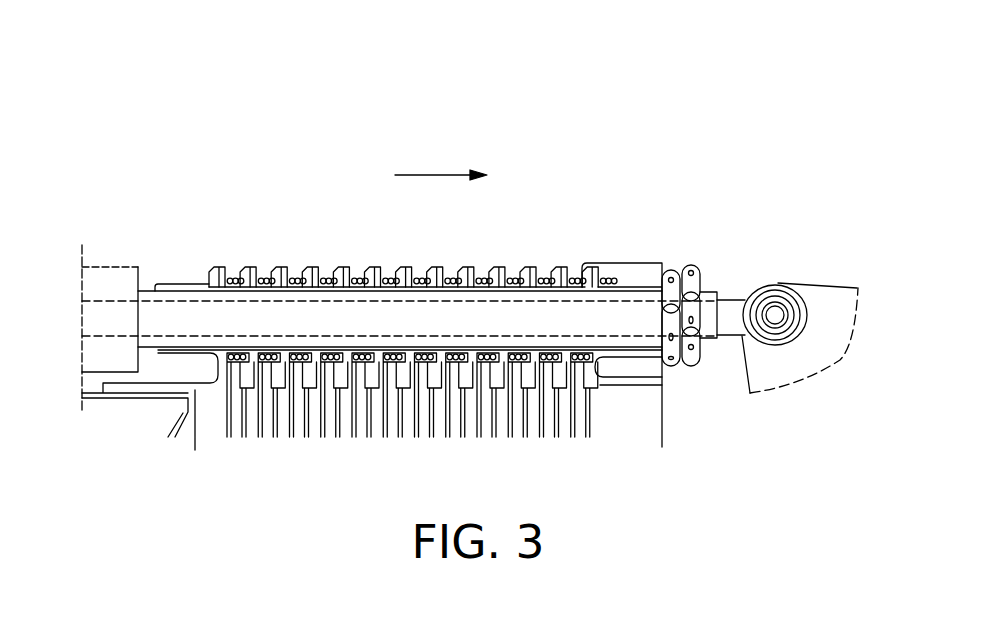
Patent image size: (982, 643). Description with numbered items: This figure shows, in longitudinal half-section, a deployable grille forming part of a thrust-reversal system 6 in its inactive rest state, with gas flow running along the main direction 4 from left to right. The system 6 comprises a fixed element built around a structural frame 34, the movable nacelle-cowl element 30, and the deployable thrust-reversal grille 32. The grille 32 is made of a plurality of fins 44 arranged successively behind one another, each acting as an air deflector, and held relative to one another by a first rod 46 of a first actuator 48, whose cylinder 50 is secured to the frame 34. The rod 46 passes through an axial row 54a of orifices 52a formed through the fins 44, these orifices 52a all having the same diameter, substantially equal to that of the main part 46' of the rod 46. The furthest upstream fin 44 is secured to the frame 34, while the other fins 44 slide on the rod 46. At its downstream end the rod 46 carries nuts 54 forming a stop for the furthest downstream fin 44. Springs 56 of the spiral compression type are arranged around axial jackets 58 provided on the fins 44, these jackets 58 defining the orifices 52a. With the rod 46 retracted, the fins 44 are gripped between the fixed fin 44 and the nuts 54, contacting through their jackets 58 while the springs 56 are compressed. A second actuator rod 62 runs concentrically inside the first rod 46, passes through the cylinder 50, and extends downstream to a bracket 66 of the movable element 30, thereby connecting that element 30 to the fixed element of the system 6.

The movable nacelle-cowl element 30 is at (554, 133).
The deployable thrust-reversal grille 32 is at (293, 190).
The main direction of flow of the gases 4 is at (430, 174).
The thrust-reversal system 6 is at (670, 204).
The structural frame 34 is at (103, 397).
The fins 44 is at (282, 362).
The first rod 46 is at (400, 262).
The main part of the rod 46' is at (607, 374).
The first actuator 48 is at (100, 264).
The cylinder 50 is at (102, 300).
The orifices 52a is at (418, 386).
The axial row of orifices 54a is at (368, 478).
The nuts 54 is at (691, 266).
The springs 56 is at (357, 363).
The axial jackets 58 is at (267, 356).
The second actuator rod 62 is at (727, 307).
The bracket 66 is at (828, 312).